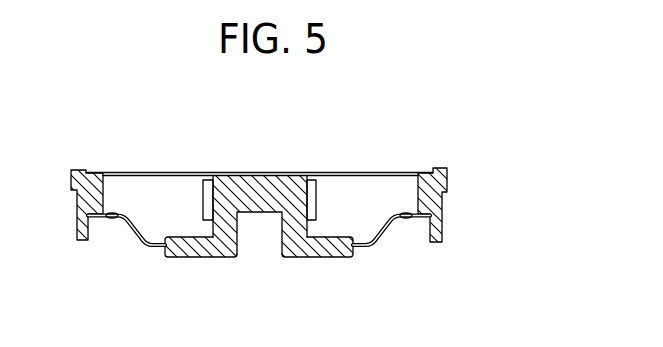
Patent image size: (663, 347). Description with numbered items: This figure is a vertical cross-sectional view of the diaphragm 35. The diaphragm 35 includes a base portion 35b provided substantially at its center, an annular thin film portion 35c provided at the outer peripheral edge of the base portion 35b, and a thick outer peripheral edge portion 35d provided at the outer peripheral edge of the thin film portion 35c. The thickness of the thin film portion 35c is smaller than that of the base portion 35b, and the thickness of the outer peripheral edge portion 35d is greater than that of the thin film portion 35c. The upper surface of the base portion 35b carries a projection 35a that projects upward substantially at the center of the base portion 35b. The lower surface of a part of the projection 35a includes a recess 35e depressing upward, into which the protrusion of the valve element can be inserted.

The diaphragm 35 is at (395, 130).
The projection 35a is at (253, 190).
The base portion 35b is at (297, 244).
The thin film portion 35c is at (387, 228).
The outer peripheral edge portion 35d is at (448, 177).
The recess 35e is at (264, 240).